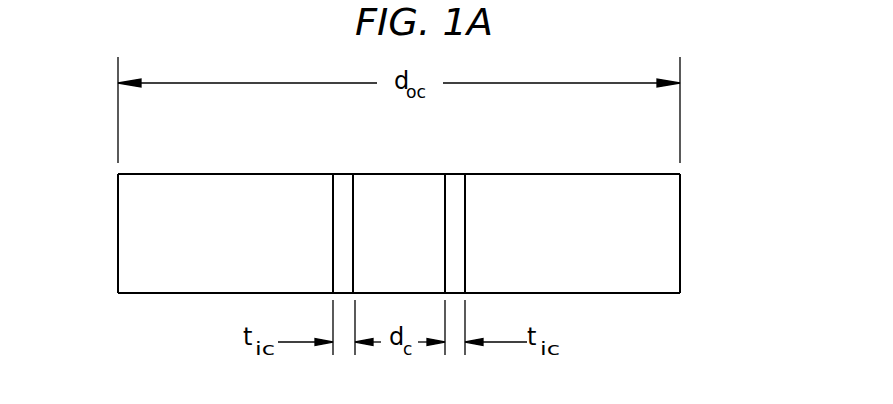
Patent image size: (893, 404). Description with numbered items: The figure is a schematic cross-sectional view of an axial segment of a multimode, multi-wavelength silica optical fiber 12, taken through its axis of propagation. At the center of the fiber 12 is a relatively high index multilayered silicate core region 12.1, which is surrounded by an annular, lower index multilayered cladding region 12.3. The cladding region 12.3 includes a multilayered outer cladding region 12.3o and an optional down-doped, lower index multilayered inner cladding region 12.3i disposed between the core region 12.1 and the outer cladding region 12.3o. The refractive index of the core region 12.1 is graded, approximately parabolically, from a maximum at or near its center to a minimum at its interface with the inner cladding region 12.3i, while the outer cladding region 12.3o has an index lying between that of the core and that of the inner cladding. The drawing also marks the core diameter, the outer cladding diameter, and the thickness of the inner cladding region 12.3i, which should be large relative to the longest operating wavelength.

The optical fiber 12 is at (731, 114).
The core region 12.1 is at (427, 230).
The cladding region 12.3 is at (345, 154).
The inner cladding region 12.3i is at (344, 180).
The outer cladding region 12.3o is at (127, 250).